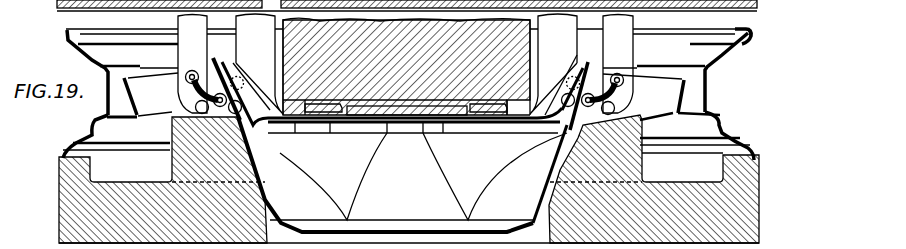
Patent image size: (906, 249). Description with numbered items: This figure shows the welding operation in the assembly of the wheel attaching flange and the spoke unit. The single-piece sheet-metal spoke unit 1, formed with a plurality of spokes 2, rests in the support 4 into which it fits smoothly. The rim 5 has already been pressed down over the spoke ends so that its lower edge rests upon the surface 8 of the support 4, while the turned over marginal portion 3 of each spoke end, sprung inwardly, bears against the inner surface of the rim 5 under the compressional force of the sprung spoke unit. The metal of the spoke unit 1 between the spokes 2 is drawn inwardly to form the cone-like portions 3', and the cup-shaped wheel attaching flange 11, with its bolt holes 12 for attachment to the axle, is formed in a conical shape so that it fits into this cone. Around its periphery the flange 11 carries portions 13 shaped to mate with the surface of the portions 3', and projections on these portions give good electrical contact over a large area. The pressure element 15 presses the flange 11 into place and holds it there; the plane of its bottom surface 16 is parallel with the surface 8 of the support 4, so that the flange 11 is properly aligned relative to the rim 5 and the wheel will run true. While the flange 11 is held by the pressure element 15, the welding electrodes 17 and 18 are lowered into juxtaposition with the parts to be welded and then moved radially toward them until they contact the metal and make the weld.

The spoke unit 1 is at (402, 174).
The spokes 2 is at (148, 83).
The turned over portion of the spoke end 3 is at (406, 135).
The portions of the spoke unit 3' is at (247, 124).
The support 4 is at (757, 192).
The rim 5 is at (740, 41).
The surface of the support 8 is at (740, 140).
The wheel attaching flange 11 is at (443, 133).
The bolt holes 12 is at (330, 133).
The portions of the wheel attaching flange 13 is at (232, 92).
The pressure element 15 is at (520, 46).
The bottom surface of the pressure element 16 is at (296, 134).
The welding electrode 17 is at (245, 32).
The welding electrode 18 is at (187, 51).